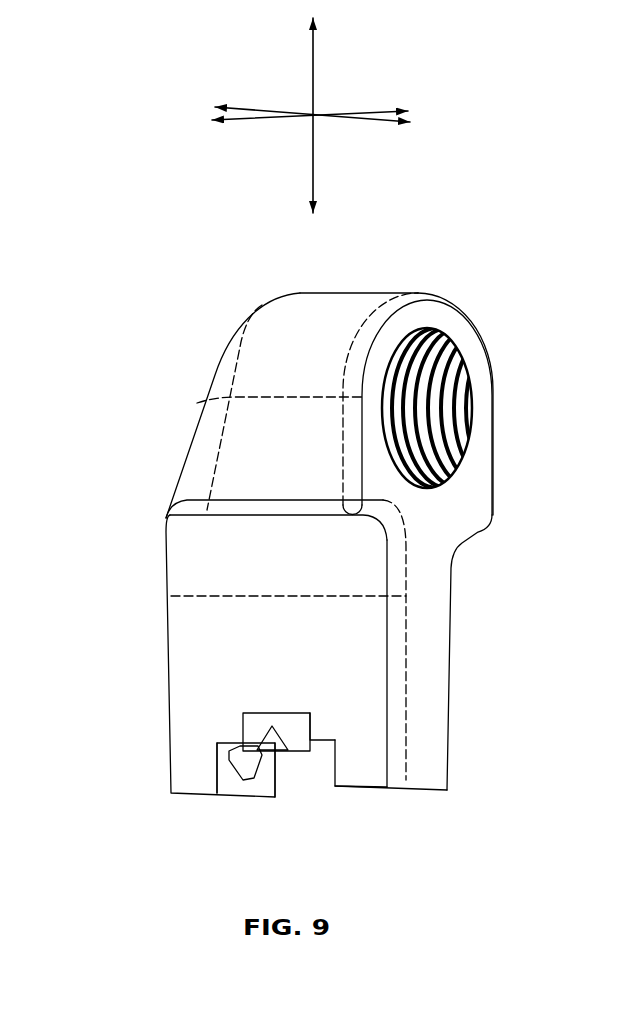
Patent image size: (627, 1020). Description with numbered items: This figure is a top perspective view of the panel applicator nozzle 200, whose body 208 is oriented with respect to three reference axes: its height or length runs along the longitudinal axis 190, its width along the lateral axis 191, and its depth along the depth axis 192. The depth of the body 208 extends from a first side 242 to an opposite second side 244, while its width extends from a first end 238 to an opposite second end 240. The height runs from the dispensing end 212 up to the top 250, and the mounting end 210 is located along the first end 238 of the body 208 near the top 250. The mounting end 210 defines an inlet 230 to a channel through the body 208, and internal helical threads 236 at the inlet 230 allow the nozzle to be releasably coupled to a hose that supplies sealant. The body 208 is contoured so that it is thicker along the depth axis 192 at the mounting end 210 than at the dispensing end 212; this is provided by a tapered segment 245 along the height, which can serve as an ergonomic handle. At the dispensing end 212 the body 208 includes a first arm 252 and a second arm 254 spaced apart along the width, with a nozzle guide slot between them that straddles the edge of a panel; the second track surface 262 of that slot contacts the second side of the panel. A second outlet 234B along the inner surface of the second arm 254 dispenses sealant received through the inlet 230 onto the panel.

The longitudinal axis 190 is at (315, 52).
The lateral axis 191 is at (372, 110).
The depth axis 192 is at (375, 124).
The applicator nozzle 200 is at (125, 362).
The body 208 is at (207, 453).
The mounting end 210 is at (461, 336).
The dispensing end 212 is at (357, 827).
The inlet 230 is at (454, 387).
The internal helical threads 236 is at (462, 433).
The first end 238 is at (431, 685).
The second end 240 is at (170, 688).
The first side 242 is at (242, 598).
The second side 244 is at (450, 626).
The tapered segment 245 is at (247, 540).
The top 250 is at (375, 293).
The first arm 252 is at (383, 763).
The second arm 254 is at (183, 773).
The second track surface 262 is at (260, 725).
The second outlet 234B is at (251, 771).